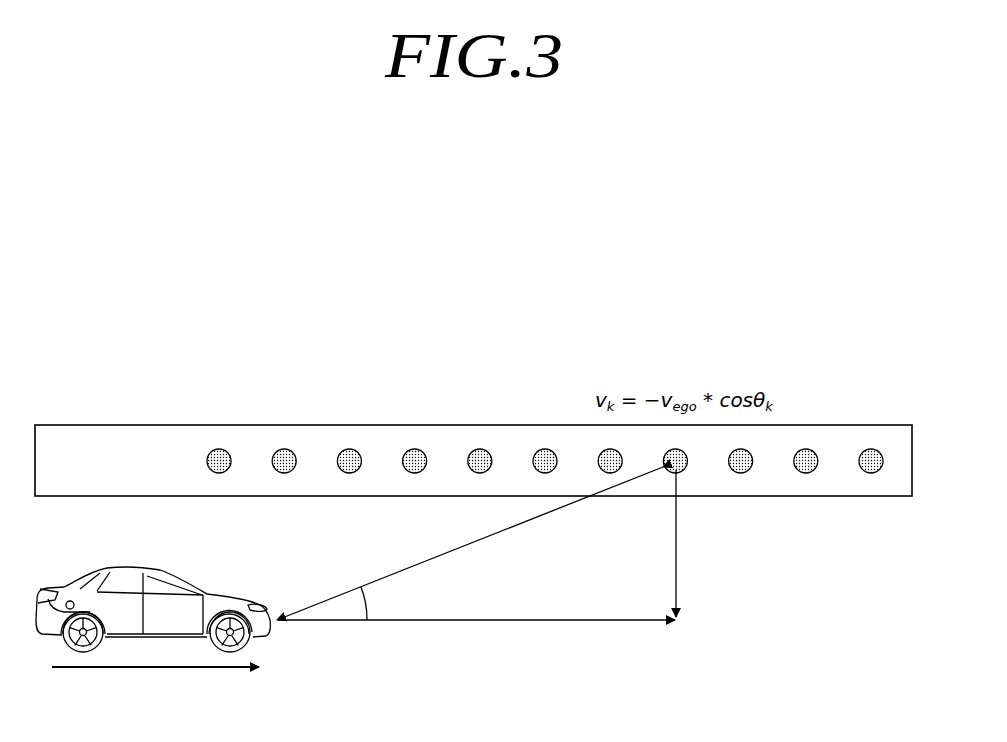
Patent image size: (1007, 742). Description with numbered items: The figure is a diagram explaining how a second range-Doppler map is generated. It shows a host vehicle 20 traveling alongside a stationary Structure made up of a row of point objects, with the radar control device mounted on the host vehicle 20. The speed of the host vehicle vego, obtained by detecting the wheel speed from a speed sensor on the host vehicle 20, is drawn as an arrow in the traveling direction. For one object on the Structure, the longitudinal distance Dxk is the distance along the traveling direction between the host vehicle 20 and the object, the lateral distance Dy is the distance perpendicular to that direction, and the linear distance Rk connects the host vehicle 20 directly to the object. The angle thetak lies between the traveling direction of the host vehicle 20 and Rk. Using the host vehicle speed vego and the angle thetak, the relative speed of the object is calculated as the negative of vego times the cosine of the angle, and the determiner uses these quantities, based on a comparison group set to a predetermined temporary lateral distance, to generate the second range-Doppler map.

The host vehicle 20 is at (237, 592).
The stationary structure with point targets Structure is at (473, 460).
The linear distance Rk is at (470, 543).
The lateral distance Dy is at (692, 543).
The longitudinal distance Dxk is at (476, 638).
The angle thetak is at (376, 603).
The speed of the host vehicle vego is at (155, 680).